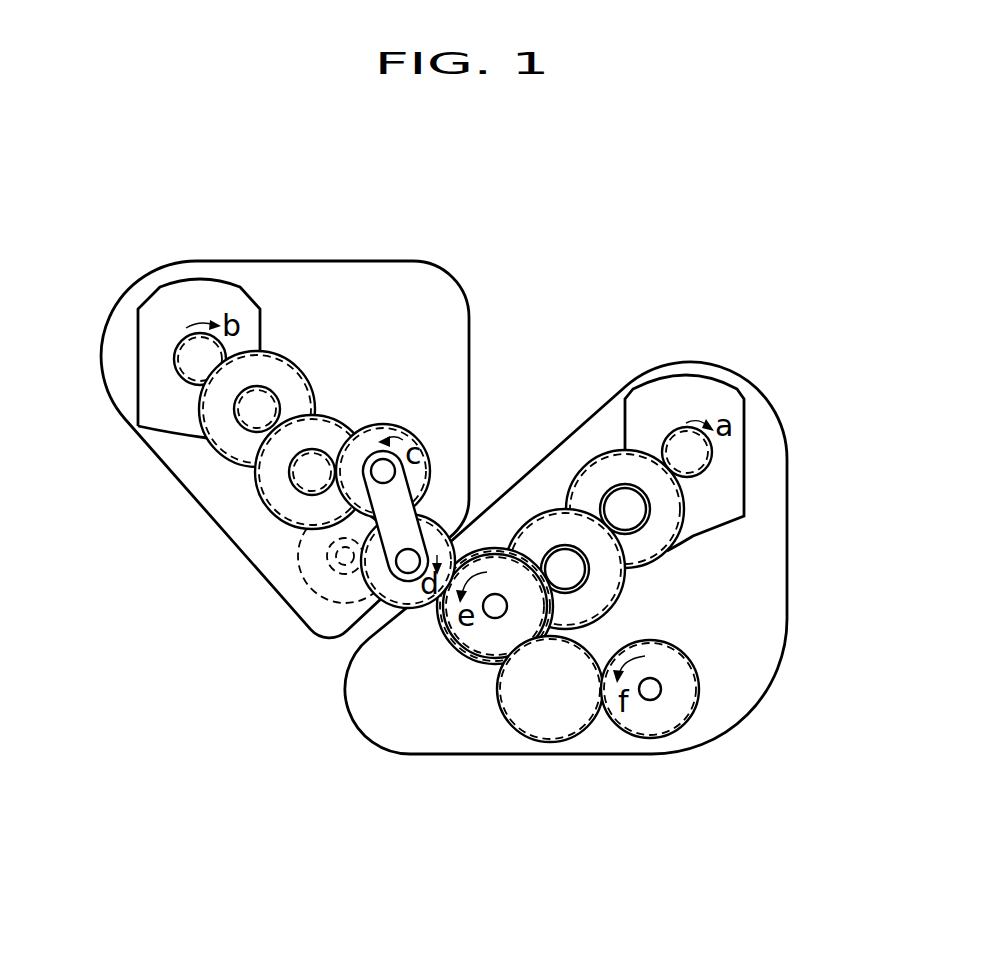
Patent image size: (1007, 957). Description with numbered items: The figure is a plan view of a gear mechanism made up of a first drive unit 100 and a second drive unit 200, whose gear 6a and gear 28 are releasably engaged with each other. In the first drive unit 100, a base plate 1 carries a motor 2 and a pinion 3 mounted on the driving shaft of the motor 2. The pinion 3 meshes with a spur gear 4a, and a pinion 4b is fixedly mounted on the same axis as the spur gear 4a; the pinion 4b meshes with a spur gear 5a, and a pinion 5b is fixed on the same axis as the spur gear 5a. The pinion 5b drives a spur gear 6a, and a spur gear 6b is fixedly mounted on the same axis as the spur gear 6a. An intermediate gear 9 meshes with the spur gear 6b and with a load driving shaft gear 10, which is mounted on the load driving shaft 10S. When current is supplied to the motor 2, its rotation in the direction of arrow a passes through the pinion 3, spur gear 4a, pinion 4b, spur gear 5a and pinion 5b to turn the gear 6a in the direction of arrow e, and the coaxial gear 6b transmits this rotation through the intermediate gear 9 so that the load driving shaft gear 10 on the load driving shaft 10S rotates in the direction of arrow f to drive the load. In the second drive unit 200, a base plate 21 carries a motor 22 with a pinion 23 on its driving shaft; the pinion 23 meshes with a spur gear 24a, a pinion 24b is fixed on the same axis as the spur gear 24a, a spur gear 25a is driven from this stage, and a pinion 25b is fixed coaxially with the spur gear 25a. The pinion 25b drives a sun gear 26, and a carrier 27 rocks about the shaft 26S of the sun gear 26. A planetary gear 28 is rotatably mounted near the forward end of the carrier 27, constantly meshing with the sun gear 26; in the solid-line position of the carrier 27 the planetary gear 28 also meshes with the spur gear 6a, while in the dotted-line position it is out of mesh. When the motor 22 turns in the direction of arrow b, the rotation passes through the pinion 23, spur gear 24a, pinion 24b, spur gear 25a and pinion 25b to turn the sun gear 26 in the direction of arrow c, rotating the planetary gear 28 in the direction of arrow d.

The base plate 1 is at (758, 405).
The motor 2 is at (712, 398).
The pinion 3 is at (668, 434).
The spur gear 4a is at (670, 557).
The pinion 4b is at (634, 540).
The spur gear 5a is at (525, 523).
The pinion 5b is at (554, 547).
The spur gear 6a is at (456, 654).
The spur gear 6b is at (490, 667).
The intermediate gear 9 is at (557, 745).
The load driving shaft gear 10 is at (650, 742).
The load driving shaft 10S is at (661, 690).
The base plate 21 is at (348, 283).
The motor 22 is at (187, 300).
The pinion 23 is at (174, 356).
The spur gear 24a is at (236, 442).
The pinion 24b is at (205, 441).
The spur gear 25a is at (293, 495).
The pinion 25b is at (273, 517).
The sun gear 26 is at (403, 428).
The shaft 26S is at (378, 460).
The carrier 27 is at (426, 500).
The planetary gear 28 is at (399, 610).
The first drive unit 100 is at (582, 581).
The second drive unit 200 is at (285, 487).